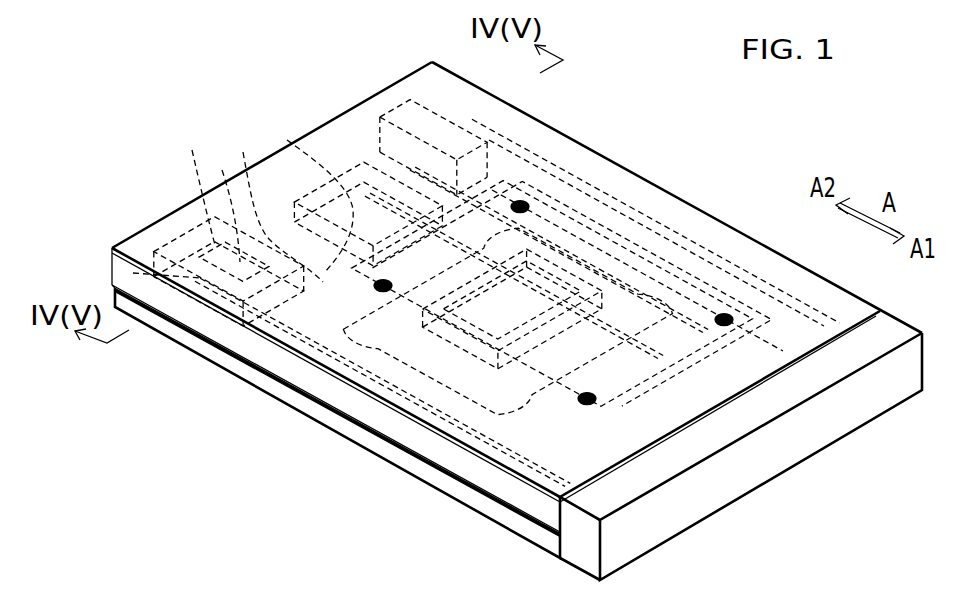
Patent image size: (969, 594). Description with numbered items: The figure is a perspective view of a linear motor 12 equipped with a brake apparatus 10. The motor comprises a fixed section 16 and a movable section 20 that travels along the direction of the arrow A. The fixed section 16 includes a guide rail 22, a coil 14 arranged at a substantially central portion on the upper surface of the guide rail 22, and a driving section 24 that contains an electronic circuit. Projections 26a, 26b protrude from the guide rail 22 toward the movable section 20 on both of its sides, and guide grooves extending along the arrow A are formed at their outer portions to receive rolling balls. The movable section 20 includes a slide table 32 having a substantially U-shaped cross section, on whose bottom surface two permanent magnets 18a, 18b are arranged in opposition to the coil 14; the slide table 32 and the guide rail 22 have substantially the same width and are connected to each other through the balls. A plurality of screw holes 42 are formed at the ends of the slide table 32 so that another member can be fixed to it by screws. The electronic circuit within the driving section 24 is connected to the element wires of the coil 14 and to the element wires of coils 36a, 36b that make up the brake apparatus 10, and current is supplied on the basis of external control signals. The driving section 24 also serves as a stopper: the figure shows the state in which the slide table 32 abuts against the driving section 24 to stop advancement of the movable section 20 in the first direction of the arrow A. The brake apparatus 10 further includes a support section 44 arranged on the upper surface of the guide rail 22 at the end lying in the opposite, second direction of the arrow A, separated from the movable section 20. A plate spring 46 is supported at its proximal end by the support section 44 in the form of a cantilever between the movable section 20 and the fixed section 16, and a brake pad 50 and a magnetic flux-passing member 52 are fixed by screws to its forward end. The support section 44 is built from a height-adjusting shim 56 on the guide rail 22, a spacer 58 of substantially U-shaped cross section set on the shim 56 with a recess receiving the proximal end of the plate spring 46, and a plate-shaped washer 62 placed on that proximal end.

The brake apparatus 10 is at (335, 138).
The linear motor 12 is at (792, 110).
The coil 14 is at (665, 230).
The fixed section 16 is at (387, 465).
The permanent magnet 18a is at (368, 214).
The permanent magnet 18b is at (745, 255).
The movable section 20 is at (618, 156).
The guide rail 22 is at (478, 498).
The driving section 24 is at (802, 448).
The projection 26a is at (165, 245).
The projection 26b is at (399, 100).
The slide table 32 is at (587, 173).
The coil 36a is at (243, 152).
The coil 36b is at (287, 140).
The screw hole 42 is at (524, 202).
The support section 44 is at (198, 222).
The plate spring 46 is at (222, 170).
The brake pad 50 is at (483, 118).
The magnetic flux-passing member 52 is at (494, 130).
The height-adjusting shim 56 is at (258, 380).
The spacer 58 is at (228, 350).
The washer 62 is at (192, 150).